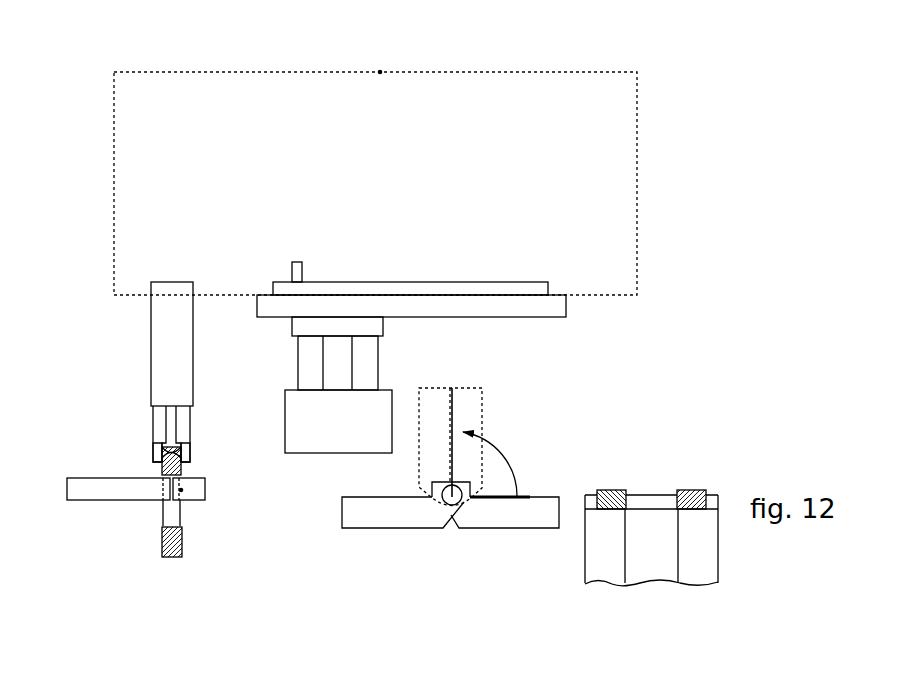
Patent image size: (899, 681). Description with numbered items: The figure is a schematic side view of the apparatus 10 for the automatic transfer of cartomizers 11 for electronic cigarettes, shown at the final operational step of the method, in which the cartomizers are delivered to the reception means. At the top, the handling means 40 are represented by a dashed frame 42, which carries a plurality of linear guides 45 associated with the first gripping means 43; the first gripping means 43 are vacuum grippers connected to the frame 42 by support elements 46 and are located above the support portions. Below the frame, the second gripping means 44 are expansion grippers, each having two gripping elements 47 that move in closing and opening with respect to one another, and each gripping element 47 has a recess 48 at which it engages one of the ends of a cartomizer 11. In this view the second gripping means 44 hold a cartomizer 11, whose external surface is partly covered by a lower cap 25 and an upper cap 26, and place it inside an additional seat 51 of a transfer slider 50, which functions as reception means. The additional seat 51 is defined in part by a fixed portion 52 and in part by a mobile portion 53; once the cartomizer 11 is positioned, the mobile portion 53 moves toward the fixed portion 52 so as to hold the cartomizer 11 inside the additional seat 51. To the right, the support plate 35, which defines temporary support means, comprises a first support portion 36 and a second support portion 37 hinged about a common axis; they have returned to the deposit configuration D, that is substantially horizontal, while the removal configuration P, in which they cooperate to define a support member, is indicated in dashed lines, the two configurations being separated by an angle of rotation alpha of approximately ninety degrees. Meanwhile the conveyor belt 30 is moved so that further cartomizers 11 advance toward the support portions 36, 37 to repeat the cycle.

The apparatus 10 is at (741, 42).
The cartomizer 11 is at (655, 471).
The lower cap 25 is at (170, 543).
The upper cap 26 is at (170, 467).
The conveyor belt 30 is at (459, 552).
The support plate 35 is at (466, 546).
The first support portion 36 is at (365, 515).
The second support portion 37 is at (538, 515).
The handling means 40 is at (88, 125).
The frame 42 is at (380, 72).
The first gripping means 43 is at (393, 371).
The second gripping means 44 is at (149, 353).
The linear guide 45 is at (517, 295).
The support element 46 is at (168, 305).
The gripping element 47 is at (161, 428).
The recess 48 is at (161, 446).
The transfer slider 50 is at (169, 534).
The additional seat 51 is at (157, 493).
The fixed portion 52 is at (84, 490).
The mobile portion 53 is at (195, 487).
The removal configuration P is at (496, 375).
The deposit configuration D is at (409, 553).
The angle of rotation alpha is at (503, 456).